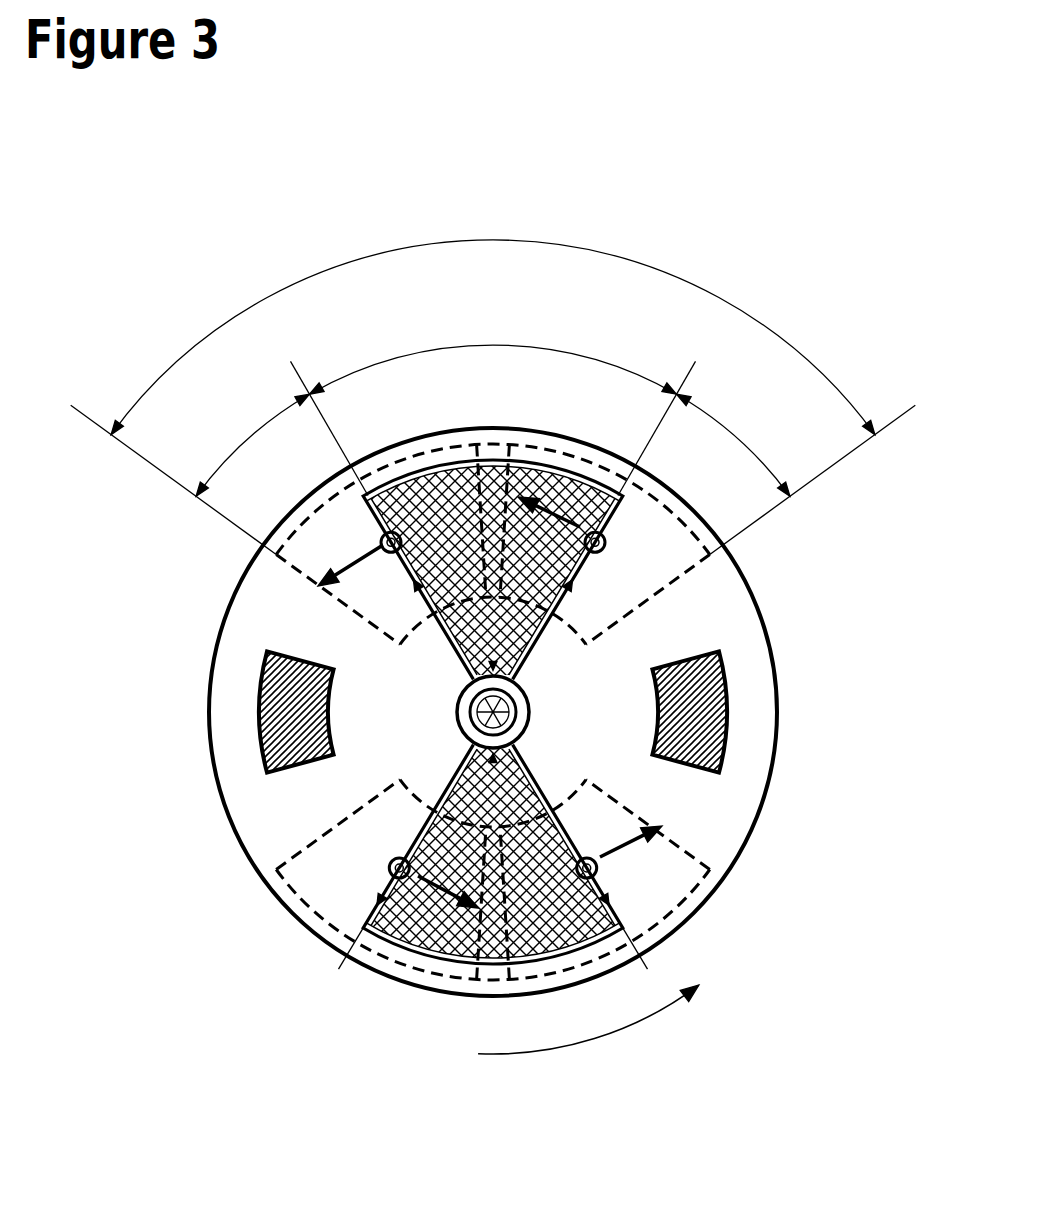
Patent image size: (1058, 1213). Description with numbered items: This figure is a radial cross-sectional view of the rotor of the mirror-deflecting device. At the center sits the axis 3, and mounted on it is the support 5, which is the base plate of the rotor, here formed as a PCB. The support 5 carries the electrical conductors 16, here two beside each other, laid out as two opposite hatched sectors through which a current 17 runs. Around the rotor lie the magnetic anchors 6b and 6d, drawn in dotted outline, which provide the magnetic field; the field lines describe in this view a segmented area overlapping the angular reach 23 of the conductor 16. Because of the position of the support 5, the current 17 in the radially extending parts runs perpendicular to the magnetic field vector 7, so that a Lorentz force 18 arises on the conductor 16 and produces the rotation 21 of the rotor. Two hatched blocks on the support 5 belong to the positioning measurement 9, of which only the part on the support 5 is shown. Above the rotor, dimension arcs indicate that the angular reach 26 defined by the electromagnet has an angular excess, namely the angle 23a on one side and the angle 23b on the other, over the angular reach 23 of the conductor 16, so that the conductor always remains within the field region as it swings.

The axis 3 is at (495, 711).
The support 5 is at (758, 738).
The magnetic anchor 6b is at (332, 592).
The magnetic anchor 6d is at (317, 862).
The magnetic field vector 7 is at (500, 695).
The positioning measurement means 9 is at (256, 700).
The electrical conductor 16 is at (608, 490).
The current 17 is at (476, 740).
The Lorentz force 18 is at (481, 694).
The rotation 21 is at (588, 1025).
The angular reach of the conductor 23 is at (493, 350).
The angle 23a is at (252, 445).
The angle 23b is at (738, 445).
The angular reach 26 is at (493, 313).